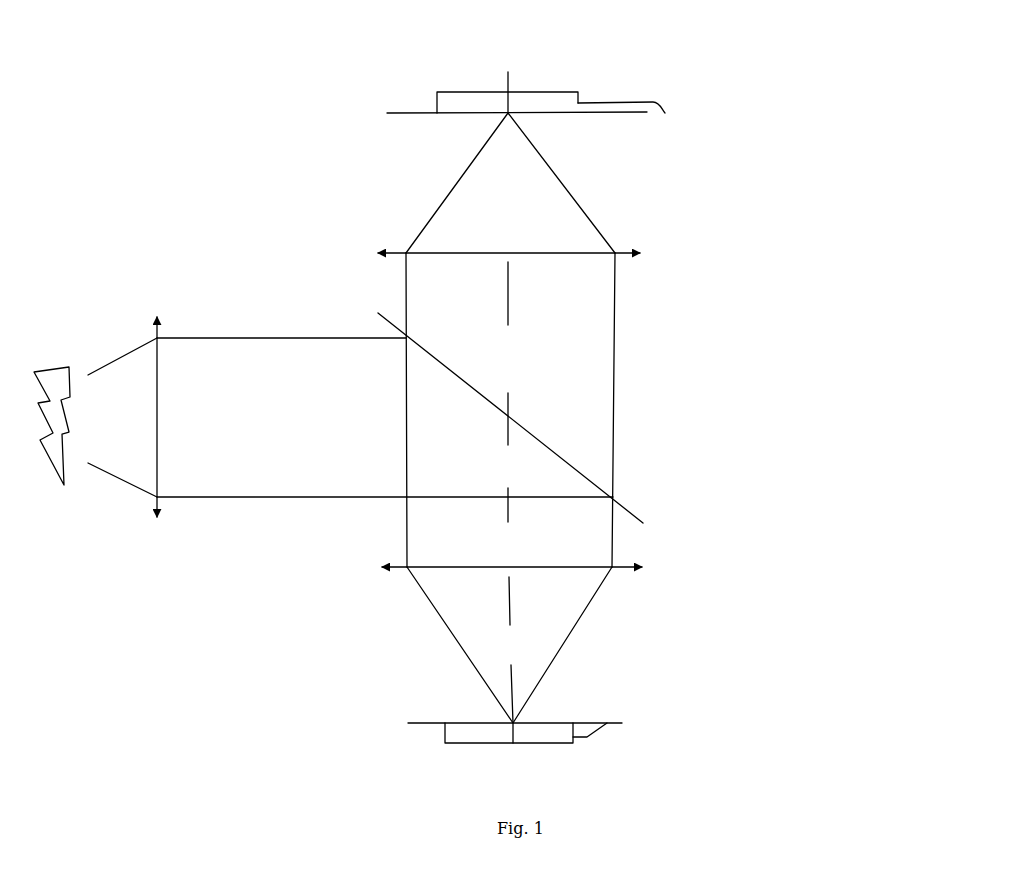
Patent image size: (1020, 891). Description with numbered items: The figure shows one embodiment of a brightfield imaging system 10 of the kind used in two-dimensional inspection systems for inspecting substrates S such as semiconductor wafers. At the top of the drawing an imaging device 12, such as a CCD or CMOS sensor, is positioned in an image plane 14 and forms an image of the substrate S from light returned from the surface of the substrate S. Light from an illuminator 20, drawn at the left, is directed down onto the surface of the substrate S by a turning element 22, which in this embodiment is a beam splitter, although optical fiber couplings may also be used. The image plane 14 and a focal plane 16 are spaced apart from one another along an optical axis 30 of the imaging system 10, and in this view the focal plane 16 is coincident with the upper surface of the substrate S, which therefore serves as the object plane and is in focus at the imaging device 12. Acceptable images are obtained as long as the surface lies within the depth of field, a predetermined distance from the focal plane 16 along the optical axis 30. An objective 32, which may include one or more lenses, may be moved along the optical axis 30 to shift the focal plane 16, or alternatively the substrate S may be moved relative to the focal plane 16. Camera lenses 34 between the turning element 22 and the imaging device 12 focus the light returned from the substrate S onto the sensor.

The imaging system 10 is at (738, 252).
The imaging device 12 is at (665, 113).
The image plane 14 is at (413, 113).
The focal plane 16 is at (435, 723).
The illuminator 20 is at (51, 347).
The turning element 22 is at (635, 512).
The optical axis 30 is at (508, 80).
The objective 32 is at (427, 567).
The camera lenses 34 is at (423, 258).
The substrate S is at (607, 723).